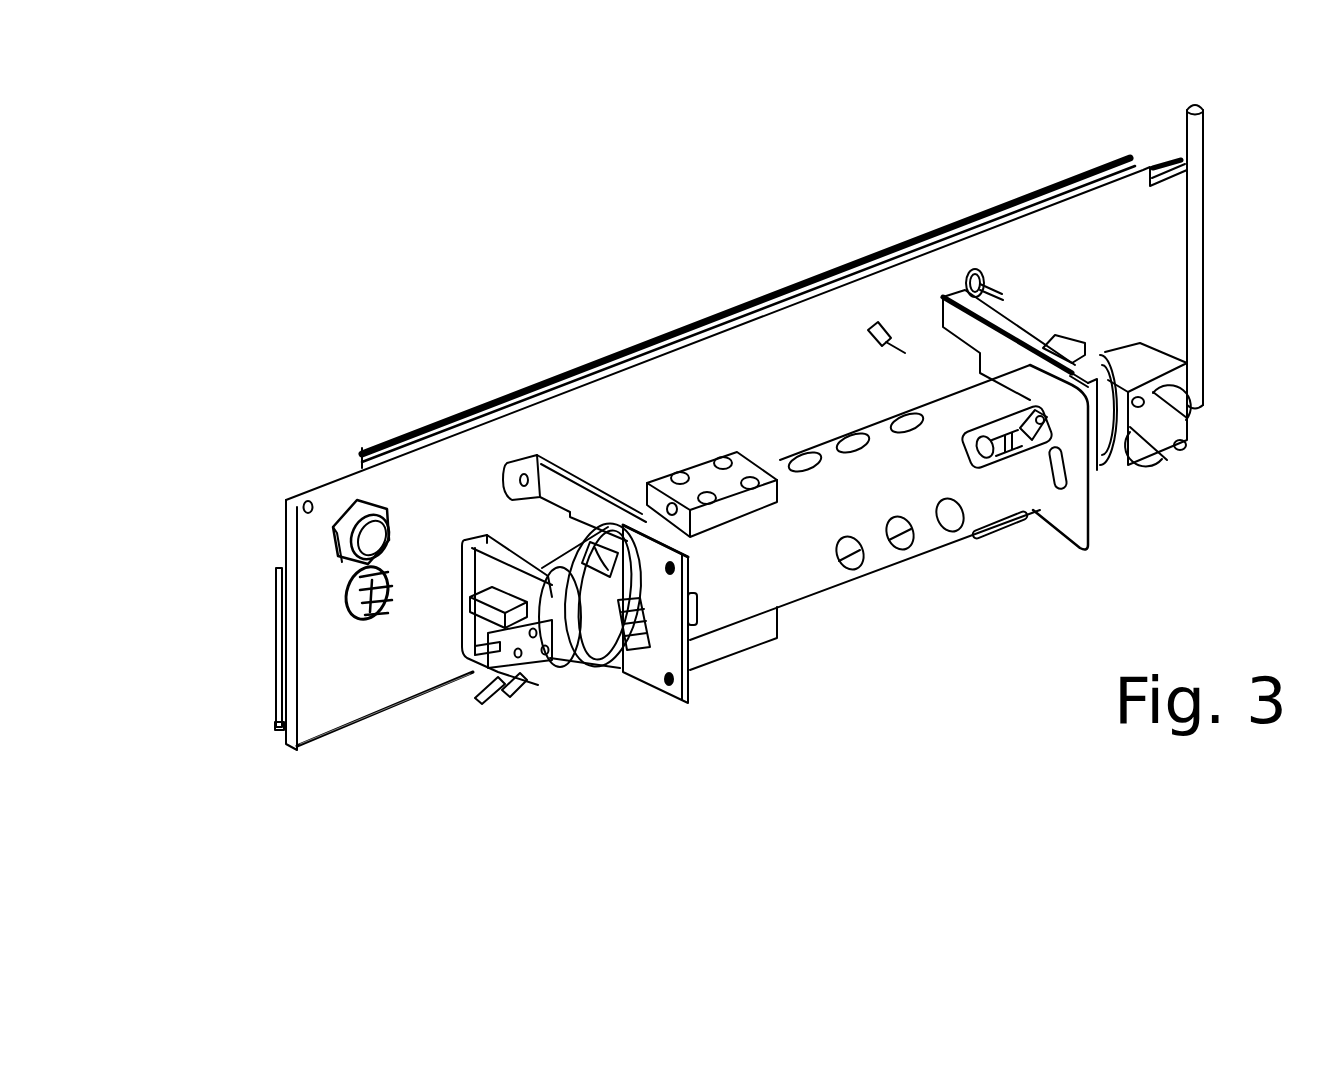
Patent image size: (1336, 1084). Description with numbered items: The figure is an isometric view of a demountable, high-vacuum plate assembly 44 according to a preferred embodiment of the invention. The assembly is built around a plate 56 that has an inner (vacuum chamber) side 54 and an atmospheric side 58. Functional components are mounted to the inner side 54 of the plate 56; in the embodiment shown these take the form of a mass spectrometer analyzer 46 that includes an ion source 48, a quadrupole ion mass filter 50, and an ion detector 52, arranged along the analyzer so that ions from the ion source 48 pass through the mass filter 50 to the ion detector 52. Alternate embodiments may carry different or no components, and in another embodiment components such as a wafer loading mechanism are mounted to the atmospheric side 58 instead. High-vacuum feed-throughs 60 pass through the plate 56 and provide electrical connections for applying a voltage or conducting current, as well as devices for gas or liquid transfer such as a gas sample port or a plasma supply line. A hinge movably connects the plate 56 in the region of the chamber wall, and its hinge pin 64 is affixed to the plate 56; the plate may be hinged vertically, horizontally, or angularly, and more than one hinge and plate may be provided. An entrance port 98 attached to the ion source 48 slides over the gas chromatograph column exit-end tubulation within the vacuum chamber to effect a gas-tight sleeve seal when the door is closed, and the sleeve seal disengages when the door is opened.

The demountable, high-vacuum plate assembly 44 is at (833, 317).
The mass spectrometer analyzer 46 is at (883, 557).
The ion source 48 is at (550, 680).
The quadrupole ion mass filter 50 is at (821, 437).
The ion detector 52 is at (1127, 362).
The inner (vacuum chamber) side 54 is at (343, 700).
The plate 56 is at (317, 605).
The atmospheric side 58 is at (274, 700).
The high-vacuum feed-throughs 60 is at (387, 570).
The hinge pin 64 is at (1185, 147).
The entrance port 98 is at (640, 634).